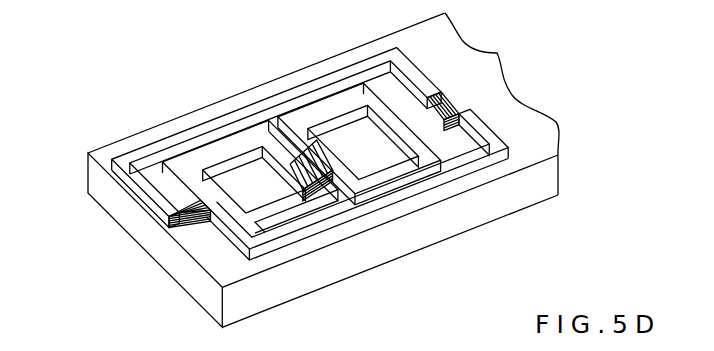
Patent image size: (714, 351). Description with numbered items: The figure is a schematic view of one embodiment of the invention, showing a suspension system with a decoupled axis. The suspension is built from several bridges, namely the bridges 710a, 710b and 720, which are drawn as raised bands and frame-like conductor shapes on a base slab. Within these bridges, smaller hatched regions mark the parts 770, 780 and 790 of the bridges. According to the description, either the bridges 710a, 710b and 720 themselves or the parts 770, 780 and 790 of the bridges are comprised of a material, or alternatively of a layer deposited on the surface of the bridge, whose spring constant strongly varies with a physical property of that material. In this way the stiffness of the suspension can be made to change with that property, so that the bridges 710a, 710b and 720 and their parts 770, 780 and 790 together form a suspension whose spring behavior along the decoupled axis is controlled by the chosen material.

The bridge 710a is at (175, 218).
The bridge 710b is at (455, 106).
The bridge 720 is at (289, 172).
The part of bridge 770 is at (175, 207).
The part of bridge 780 is at (440, 101).
The part of bridge 790 is at (302, 168).